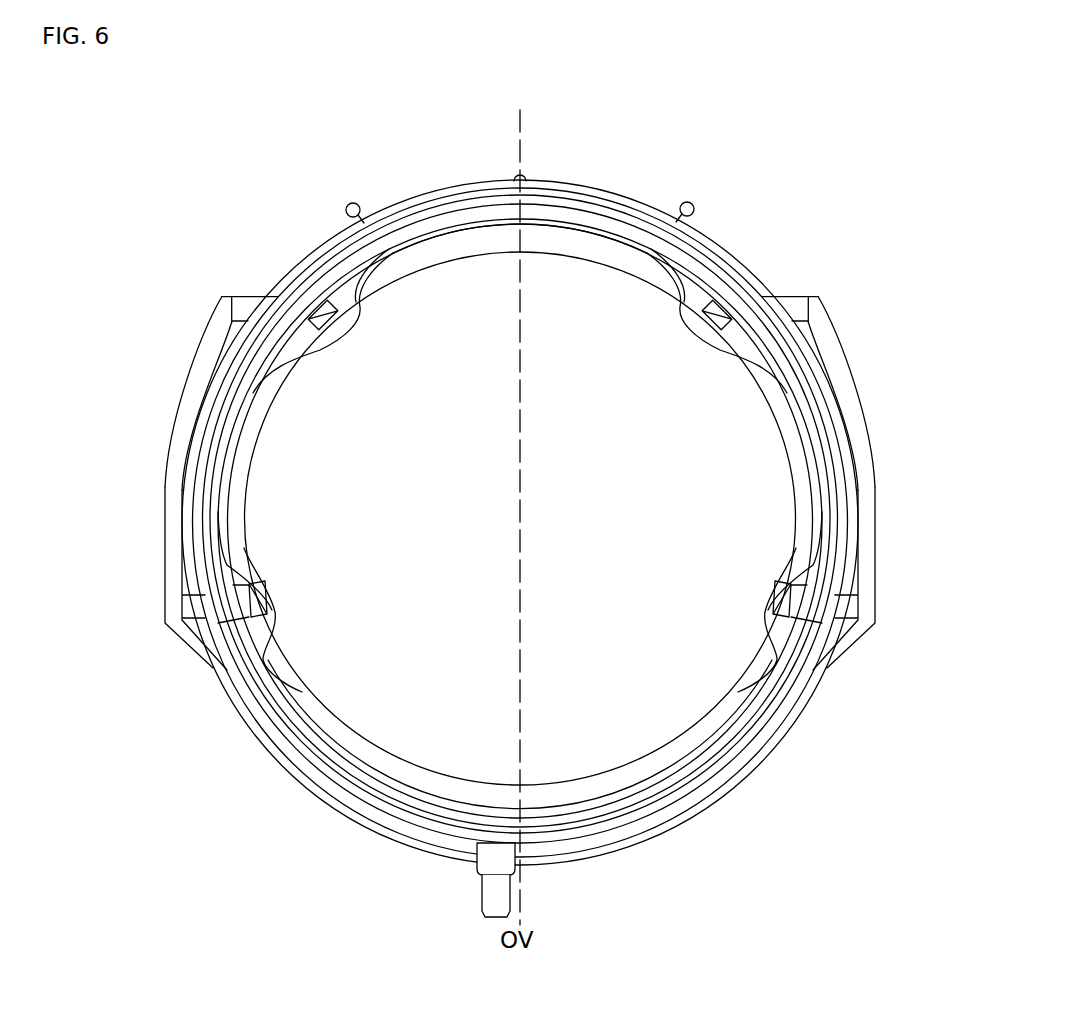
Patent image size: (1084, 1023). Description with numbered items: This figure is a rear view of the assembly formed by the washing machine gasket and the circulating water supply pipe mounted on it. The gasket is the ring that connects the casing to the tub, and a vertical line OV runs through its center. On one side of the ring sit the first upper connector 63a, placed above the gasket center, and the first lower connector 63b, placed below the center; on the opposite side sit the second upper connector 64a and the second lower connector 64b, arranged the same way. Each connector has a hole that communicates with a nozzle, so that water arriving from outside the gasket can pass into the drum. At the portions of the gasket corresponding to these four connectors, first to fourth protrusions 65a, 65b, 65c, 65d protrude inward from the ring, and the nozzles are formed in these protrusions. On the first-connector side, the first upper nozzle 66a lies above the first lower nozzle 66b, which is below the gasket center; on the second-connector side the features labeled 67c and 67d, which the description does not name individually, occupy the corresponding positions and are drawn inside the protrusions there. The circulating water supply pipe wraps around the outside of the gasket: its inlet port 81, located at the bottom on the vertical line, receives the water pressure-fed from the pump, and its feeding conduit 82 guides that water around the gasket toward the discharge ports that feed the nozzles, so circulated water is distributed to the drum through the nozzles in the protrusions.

The first upper connector 63a is at (792, 297).
The first lower connector 63b is at (845, 600).
The second upper connector 64a is at (240, 296).
The second lower connector 64b is at (193, 602).
The first protrusion 65a is at (692, 292).
The second protrusion 65b is at (804, 573).
The third protrusion 65c is at (352, 293).
The fourth protrusion 65d is at (262, 630).
The first upper nozzle 66a is at (720, 306).
The first lower nozzle 66b is at (787, 600).
The upper left coupling hole 67c is at (312, 312).
The lower left coupling hole 67d is at (262, 610).
The inlet port 81 is at (493, 897).
The feeding conduit 82 is at (378, 833).